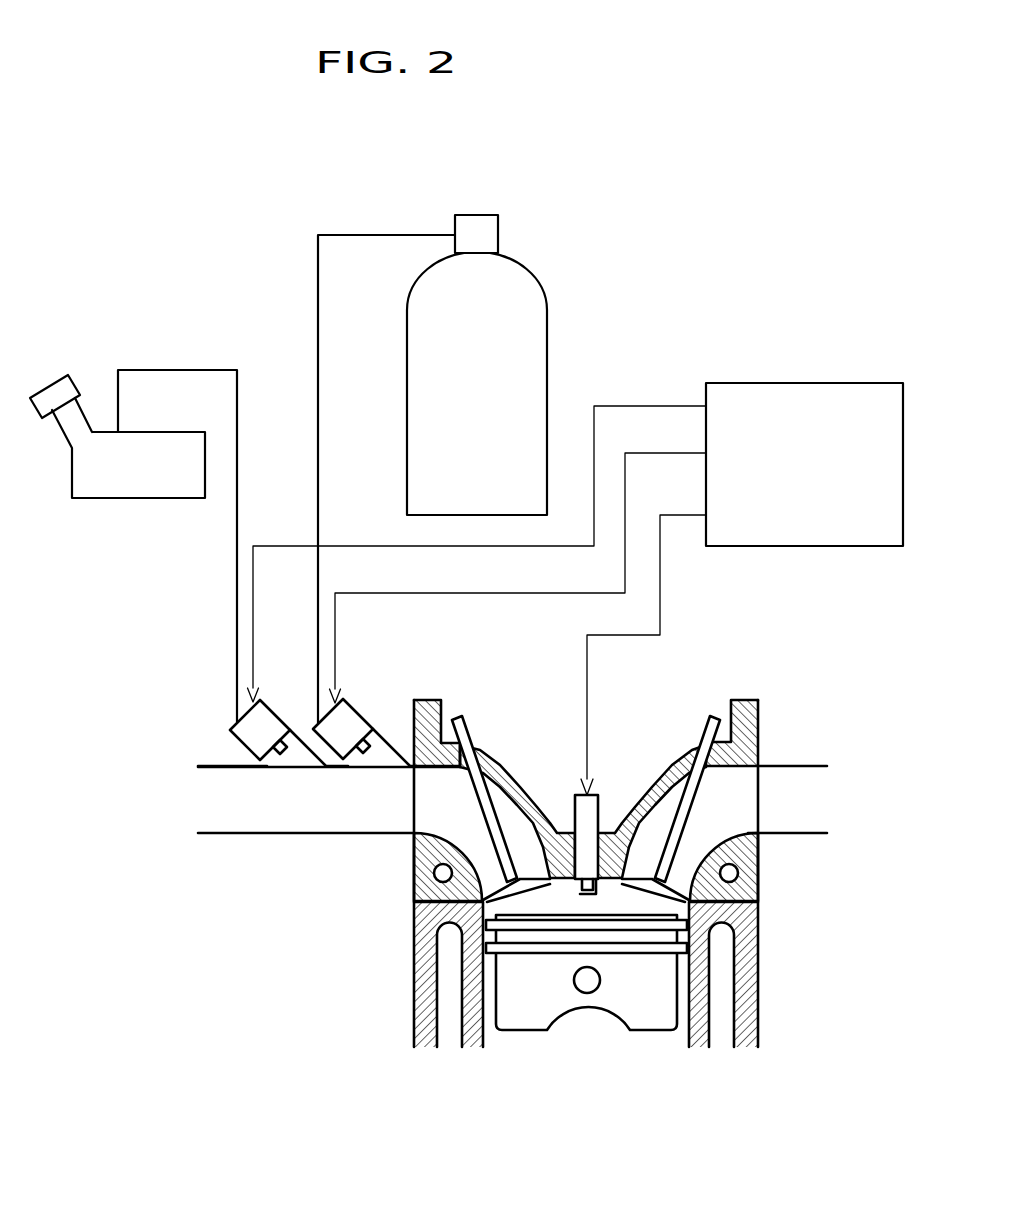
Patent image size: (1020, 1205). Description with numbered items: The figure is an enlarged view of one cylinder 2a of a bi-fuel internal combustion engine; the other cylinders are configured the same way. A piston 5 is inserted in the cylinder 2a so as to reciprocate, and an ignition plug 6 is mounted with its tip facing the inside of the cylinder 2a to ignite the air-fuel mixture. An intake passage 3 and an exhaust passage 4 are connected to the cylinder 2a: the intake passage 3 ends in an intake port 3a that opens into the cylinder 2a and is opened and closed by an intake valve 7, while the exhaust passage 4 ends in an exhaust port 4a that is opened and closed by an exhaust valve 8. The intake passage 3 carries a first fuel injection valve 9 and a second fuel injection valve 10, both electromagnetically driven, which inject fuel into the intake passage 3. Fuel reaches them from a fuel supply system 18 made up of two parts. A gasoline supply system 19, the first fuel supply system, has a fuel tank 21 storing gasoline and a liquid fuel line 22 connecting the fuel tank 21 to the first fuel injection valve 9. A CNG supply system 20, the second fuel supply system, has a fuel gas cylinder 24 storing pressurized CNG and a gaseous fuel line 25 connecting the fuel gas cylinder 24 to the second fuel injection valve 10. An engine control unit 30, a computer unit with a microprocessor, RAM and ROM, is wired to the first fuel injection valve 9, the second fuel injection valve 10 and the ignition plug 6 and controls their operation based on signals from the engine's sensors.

The cylinder 2a is at (485, 1032).
The intake passage 3 is at (228, 822).
The intake port 3a is at (438, 825).
The exhaust passage 4 is at (793, 780).
The exhaust port 4a is at (732, 783).
The piston 5 is at (637, 1012).
The ignition plug 6 is at (600, 805).
The intake valve 7 is at (503, 823).
The exhaust valve 8 is at (688, 815).
The first fuel injection valve 9 is at (240, 747).
The second fuel injection valve 10 is at (360, 715).
The fuel supply system 18 is at (133, 433).
The gasoline supply system 19 is at (117, 414).
The CNG supply system 20 is at (463, 419).
The fuel tank 21 is at (127, 488).
The liquid fuel line 22 is at (193, 368).
The fuel gas cylinder 24 is at (545, 297).
The gaseous fuel line 25 is at (320, 326).
The engine control unit (ECU) 30 is at (765, 383).